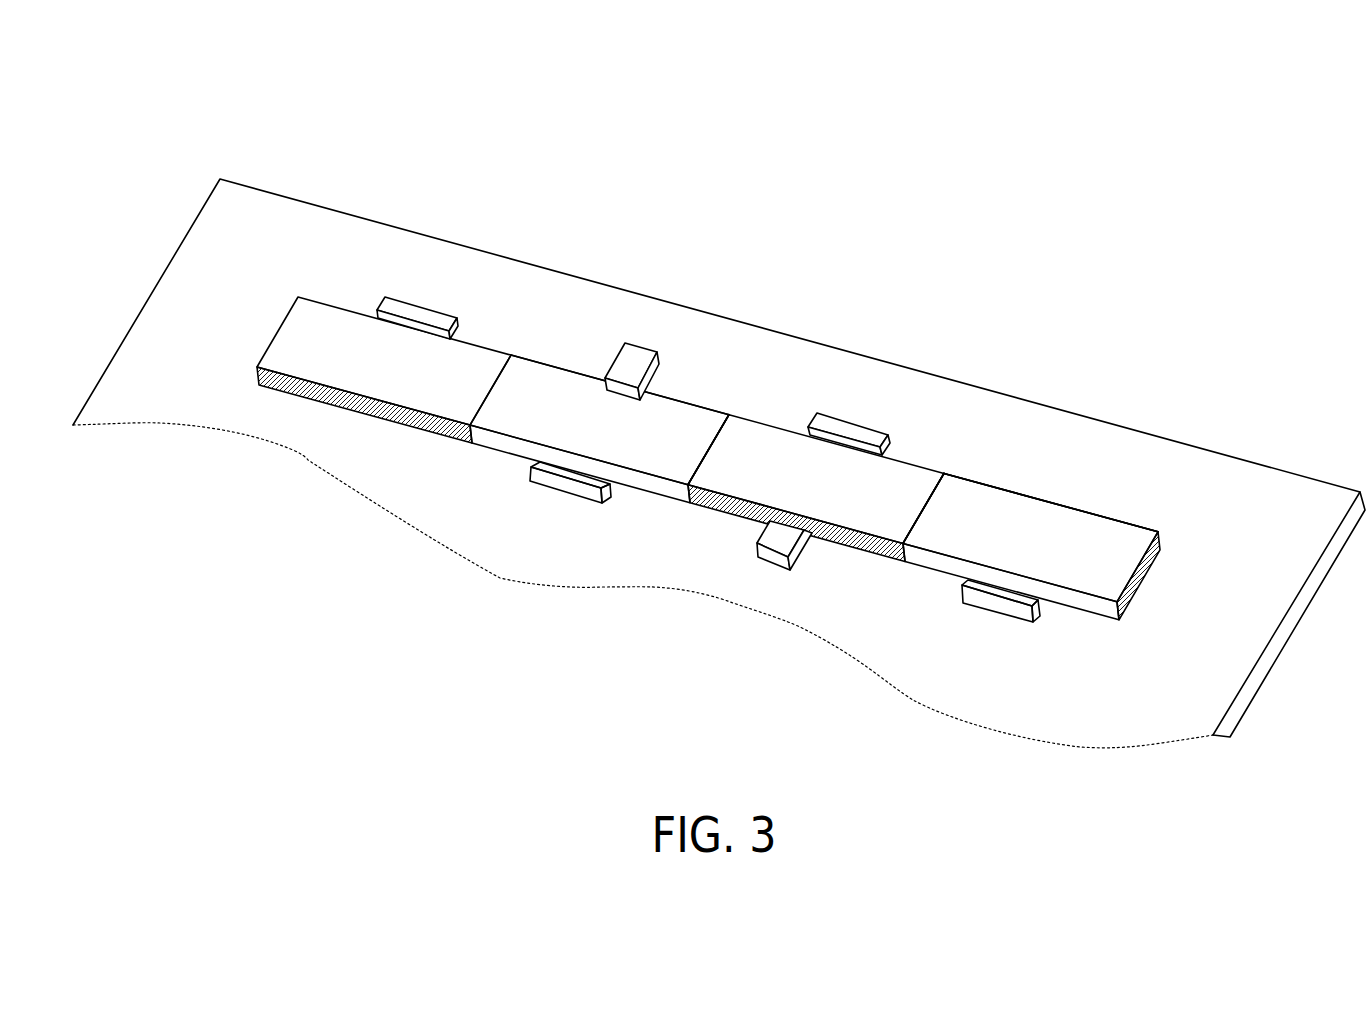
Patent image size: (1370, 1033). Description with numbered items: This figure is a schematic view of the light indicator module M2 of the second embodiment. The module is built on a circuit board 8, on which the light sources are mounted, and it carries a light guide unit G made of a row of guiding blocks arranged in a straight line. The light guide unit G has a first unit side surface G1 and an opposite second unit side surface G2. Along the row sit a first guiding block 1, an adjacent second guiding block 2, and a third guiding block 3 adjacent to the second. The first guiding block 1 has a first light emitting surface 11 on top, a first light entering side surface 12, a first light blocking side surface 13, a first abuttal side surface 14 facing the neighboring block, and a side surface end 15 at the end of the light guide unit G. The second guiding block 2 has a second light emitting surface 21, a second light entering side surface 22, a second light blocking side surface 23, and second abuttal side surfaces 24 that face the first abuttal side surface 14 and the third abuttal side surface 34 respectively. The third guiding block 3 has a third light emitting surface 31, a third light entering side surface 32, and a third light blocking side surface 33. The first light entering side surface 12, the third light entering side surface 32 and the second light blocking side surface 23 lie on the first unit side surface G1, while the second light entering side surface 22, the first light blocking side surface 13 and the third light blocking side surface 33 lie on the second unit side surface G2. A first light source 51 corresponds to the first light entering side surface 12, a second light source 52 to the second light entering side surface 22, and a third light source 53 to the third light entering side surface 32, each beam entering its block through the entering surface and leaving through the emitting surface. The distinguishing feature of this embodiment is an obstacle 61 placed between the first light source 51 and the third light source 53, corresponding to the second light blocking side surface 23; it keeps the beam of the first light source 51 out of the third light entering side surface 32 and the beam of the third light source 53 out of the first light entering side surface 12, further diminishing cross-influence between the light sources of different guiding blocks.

The light indicator module M2 is at (85, 73).
The circuit board 8 is at (1225, 673).
The light guide unit G is at (347, 337).
The first unit side surface G1 is at (338, 404).
The second unit side surface G2 is at (325, 300).
The first guiding block 1 is at (1075, 467).
The first light emitting surface 11 is at (1117, 540).
The first light entering side surface 12 is at (1027, 490).
The first light blocking side surface 13 is at (1113, 552).
The first abuttal side surface 14 is at (953, 558).
The side surface end 15 is at (1177, 504).
The second guiding block 2 is at (845, 404).
The second light emitting surface 21 is at (883, 490).
The second light entering side surface 22 is at (923, 510).
The second light blocking side surface 23 is at (745, 447).
The second abuttal side surface 24 is at (1001, 315).
The third guiding block 3 is at (623, 343).
The third light emitting surface 31 is at (577, 402).
The third light entering side surface 32 is at (508, 448).
The third light blocking side surface 33 is at (670, 393).
The third abuttal side surface 34 is at (724, 372).
The first light source 51 is at (1000, 590).
The second light source 52 is at (847, 430).
The third light source 53 is at (568, 473).
The obstacle 61 is at (632, 367).